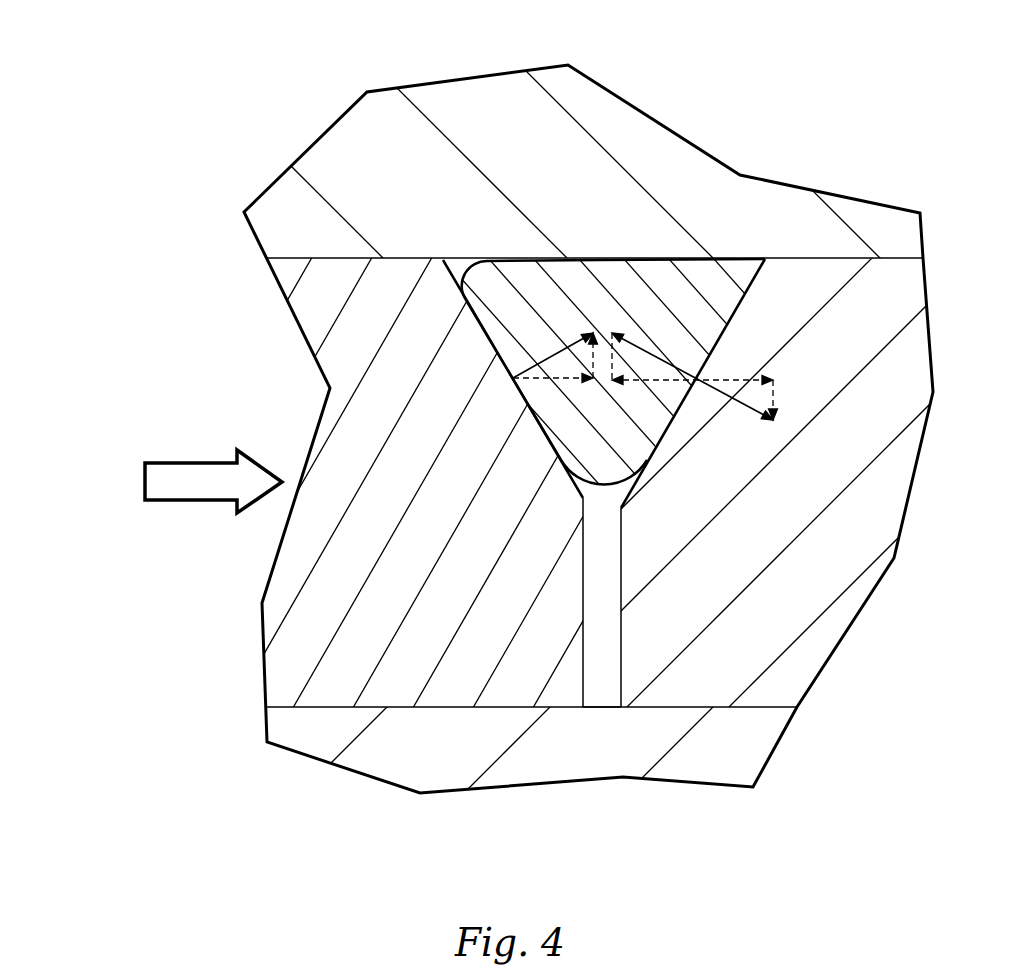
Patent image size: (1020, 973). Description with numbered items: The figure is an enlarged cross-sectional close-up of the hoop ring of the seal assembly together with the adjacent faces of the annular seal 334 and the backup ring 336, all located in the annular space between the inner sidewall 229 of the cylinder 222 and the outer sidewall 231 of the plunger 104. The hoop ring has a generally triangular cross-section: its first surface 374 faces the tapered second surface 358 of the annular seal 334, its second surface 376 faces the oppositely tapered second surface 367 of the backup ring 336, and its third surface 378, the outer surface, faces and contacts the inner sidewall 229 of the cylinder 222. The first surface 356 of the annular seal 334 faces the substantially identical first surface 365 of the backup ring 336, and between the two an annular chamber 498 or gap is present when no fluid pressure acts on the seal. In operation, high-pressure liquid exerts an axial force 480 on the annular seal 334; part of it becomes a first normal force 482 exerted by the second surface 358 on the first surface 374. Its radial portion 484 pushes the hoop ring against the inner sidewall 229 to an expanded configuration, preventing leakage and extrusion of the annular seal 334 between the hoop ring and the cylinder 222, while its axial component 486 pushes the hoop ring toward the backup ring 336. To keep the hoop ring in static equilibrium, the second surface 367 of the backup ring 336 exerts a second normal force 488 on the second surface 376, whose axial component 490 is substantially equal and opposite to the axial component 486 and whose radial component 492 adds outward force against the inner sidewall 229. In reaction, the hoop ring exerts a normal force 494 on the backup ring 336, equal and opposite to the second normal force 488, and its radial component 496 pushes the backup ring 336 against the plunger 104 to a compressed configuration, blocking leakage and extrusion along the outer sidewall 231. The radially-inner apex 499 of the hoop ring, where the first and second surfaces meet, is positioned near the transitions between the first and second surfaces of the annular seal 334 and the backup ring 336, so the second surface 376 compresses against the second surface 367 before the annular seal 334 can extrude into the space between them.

The plunger 104 is at (450, 762).
The cylinder 222 is at (443, 196).
The inner sidewall 229 is at (293, 262).
The outer sidewall 231 is at (310, 707).
The annular seal 334 is at (418, 576).
The backup ring 336 is at (798, 614).
The first surface 356 is at (583, 682).
The second surface 358 is at (443, 260).
The first surface 365 is at (620, 583).
The second surface 367 is at (720, 260).
The first surface 374 is at (477, 318).
The second surface 376 is at (720, 340).
The third surface 378 is at (595, 260).
The axial force 480 is at (203, 462).
The first normal force 482 is at (553, 376).
The radial portion 484 is at (592, 336).
The axial component 486 is at (550, 382).
The second normal force 488 is at (657, 362).
The axial component 490 is at (648, 381).
The radial component 492 is at (617, 357).
The normal force 494 is at (753, 399).
The radial component 496 is at (775, 403).
The annular chamber 498 is at (607, 657).
The radially-inner apex 499 is at (603, 485).